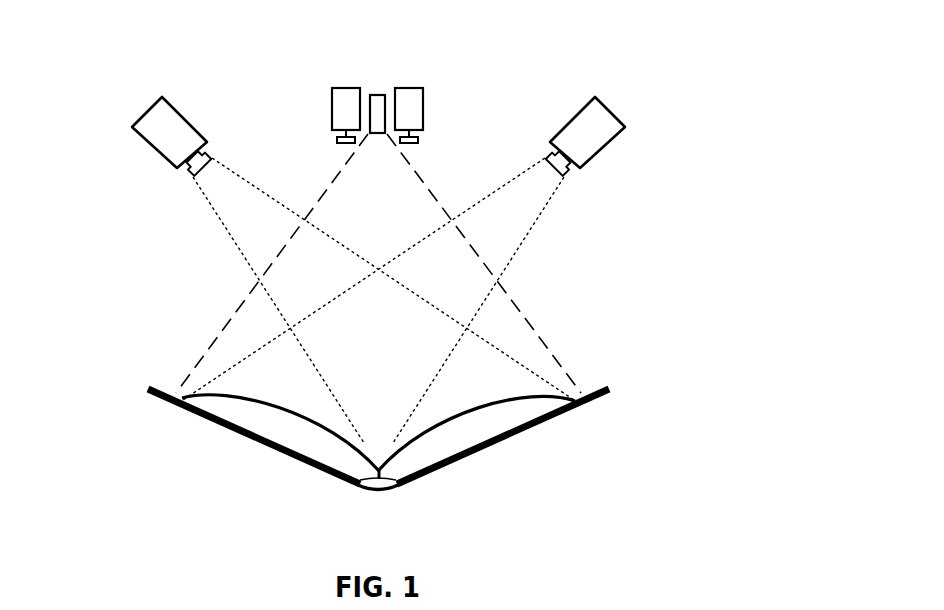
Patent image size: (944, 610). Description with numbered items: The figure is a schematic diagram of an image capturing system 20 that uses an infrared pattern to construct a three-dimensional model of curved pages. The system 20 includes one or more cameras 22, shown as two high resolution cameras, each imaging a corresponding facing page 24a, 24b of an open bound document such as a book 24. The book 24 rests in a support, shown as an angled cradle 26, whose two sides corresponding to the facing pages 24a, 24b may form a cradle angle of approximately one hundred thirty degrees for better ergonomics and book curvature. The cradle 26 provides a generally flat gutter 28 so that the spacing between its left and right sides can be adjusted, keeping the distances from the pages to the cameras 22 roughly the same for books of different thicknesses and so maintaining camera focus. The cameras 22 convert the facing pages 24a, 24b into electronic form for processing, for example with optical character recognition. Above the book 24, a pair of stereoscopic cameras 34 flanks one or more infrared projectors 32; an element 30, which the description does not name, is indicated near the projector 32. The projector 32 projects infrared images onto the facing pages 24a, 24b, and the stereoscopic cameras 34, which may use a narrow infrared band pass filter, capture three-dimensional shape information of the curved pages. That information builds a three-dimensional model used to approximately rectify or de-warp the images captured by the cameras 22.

The image capturing system 20 is at (808, 102).
The cameras 22 is at (140, 111).
The book 24 is at (568, 390).
The facing page 24a is at (279, 405).
The facing page 24b is at (471, 405).
The angled cradle 26 is at (163, 395).
The gutter 28 is at (380, 490).
The illumination unit 30 is at (417, 167).
The infrared projector 32 is at (374, 95).
The stereoscopic cameras 34 is at (347, 87).